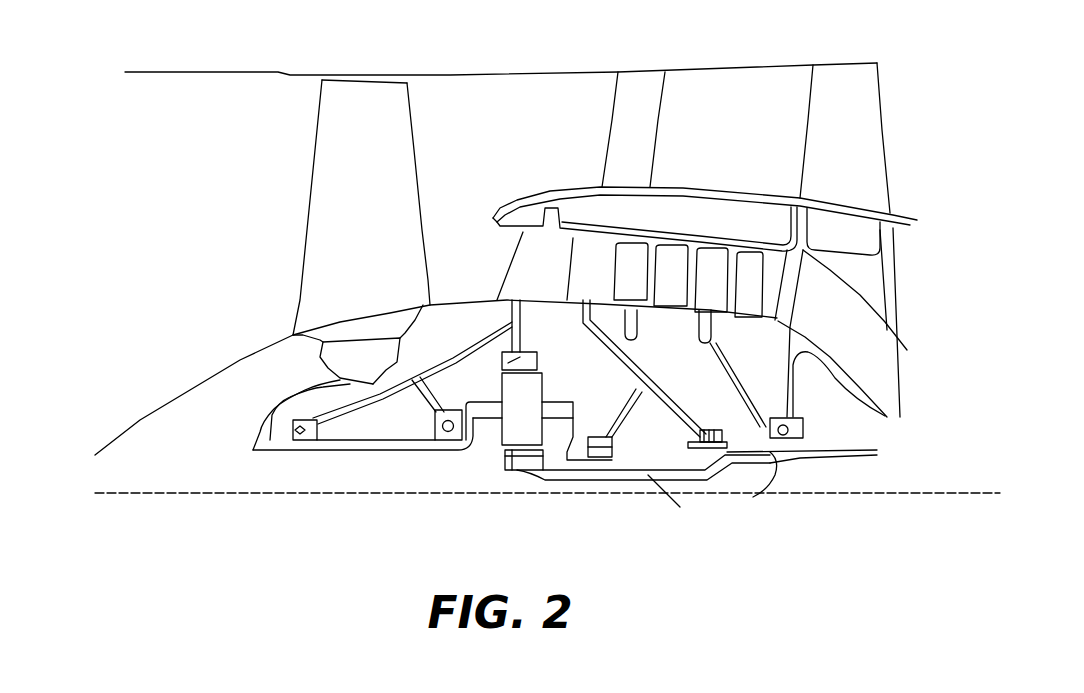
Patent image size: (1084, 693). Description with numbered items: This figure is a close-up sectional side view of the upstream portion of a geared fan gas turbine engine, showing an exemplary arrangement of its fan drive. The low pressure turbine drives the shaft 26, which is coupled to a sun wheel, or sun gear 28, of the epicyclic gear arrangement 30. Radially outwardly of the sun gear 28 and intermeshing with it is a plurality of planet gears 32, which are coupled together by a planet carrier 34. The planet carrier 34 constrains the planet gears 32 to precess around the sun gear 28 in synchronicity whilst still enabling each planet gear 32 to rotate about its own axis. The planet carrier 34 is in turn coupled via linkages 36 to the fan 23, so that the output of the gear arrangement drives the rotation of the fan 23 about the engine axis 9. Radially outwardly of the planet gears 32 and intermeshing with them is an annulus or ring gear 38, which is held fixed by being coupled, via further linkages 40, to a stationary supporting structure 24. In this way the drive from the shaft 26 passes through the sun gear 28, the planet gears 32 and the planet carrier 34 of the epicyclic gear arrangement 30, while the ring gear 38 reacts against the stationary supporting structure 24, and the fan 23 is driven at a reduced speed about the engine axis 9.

The engine axis 9 is at (268, 493).
The fan 23 is at (333, 243).
The stationary supporting structure 24 is at (537, 260).
The shaft 26 is at (753, 497).
The sun gear 28 is at (516, 471).
The epicyclic gear arrangement 30 is at (477, 447).
The planet gears 32 is at (498, 443).
The planet carrier 34 is at (568, 445).
The linkages 36 is at (467, 450).
The ring gear 38 is at (502, 367).
The linkages 40 is at (523, 323).